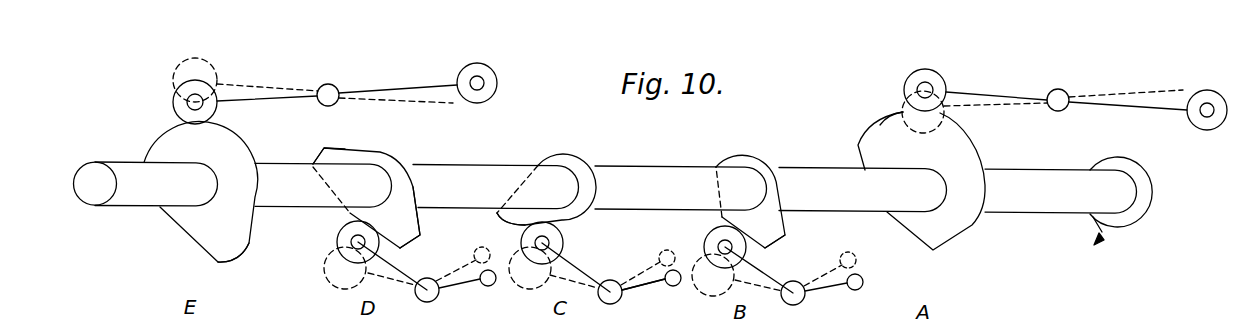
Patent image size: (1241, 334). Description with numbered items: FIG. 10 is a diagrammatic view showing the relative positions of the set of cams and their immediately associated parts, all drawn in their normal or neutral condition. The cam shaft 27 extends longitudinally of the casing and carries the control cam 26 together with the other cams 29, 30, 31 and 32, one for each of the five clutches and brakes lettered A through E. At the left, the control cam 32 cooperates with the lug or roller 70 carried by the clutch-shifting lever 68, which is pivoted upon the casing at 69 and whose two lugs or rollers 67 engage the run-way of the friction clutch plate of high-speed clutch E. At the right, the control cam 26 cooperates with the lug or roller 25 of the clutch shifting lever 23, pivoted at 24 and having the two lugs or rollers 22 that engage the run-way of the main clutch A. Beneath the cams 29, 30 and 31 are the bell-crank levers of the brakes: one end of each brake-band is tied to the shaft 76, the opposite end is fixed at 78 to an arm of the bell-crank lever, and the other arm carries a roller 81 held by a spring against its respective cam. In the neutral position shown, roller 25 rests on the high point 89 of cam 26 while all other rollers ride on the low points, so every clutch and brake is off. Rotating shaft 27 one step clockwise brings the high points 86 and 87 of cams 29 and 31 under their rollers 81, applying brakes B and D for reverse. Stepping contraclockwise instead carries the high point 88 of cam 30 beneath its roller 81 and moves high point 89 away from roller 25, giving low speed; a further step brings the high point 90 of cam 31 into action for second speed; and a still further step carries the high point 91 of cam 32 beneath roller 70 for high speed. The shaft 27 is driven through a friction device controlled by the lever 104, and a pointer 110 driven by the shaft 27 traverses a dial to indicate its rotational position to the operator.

The lugs or rollers 22 is at (1210, 92).
The clutch shifting lever 23 is at (990, 93).
The pivot 24 is at (1061, 90).
The lug or roller 25 is at (932, 74).
The control cam 26 is at (947, 213).
The cam shaft 27 is at (632, 178).
The cam 29 is at (752, 158).
The cam 30 is at (565, 154).
The cam 31 is at (386, 152).
The control cam 32 is at (207, 213).
The lugs or rollers 67 is at (484, 66).
The clutch-shifting lever 68 is at (268, 98).
The pivot 69 is at (332, 86).
The lug or roller 70 is at (173, 104).
The shaft 76 is at (427, 302).
The fixing point 78 is at (489, 287).
The roller 81 is at (337, 240).
The high point 86 is at (778, 243).
The high point 87 is at (423, 238).
The high point 88 is at (503, 219).
The high point 89 is at (905, 113).
The high point 90 is at (323, 157).
The high point 91 is at (232, 245).
The lever 104 is at (645, 306).
The pointer 110 is at (1104, 235).